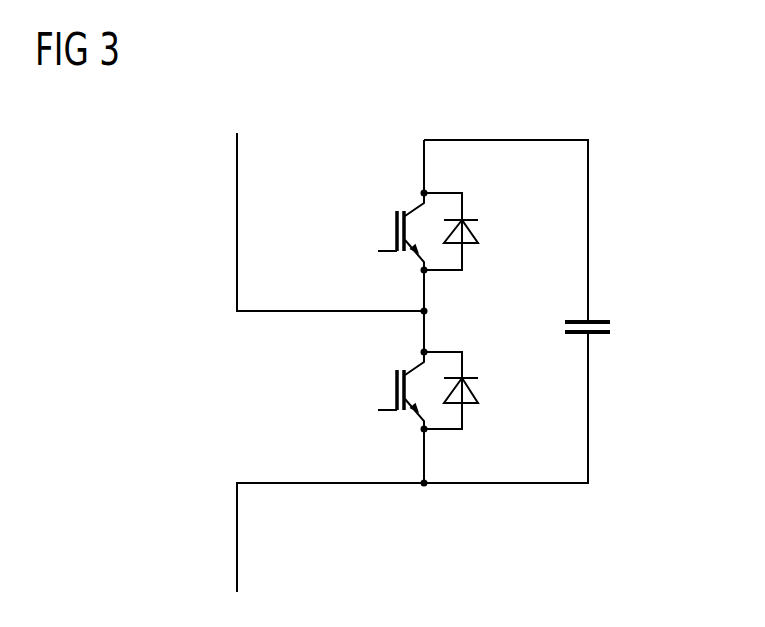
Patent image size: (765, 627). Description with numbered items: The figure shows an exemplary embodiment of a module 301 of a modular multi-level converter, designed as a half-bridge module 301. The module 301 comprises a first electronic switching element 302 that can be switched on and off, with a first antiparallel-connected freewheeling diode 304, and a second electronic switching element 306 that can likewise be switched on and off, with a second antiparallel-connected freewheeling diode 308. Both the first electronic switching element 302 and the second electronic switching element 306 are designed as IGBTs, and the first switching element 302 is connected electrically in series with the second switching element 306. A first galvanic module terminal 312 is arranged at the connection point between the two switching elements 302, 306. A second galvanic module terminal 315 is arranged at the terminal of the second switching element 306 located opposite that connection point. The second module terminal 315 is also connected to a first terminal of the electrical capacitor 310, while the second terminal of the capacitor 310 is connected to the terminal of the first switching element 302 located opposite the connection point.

The module 301 is at (603, 88).
The first electronic switching element 302 is at (396, 220).
The first freewheeling diode 304 is at (470, 229).
The second electronic switching element 306 is at (396, 380).
The second freewheeling diode 308 is at (470, 393).
The capacitor 310 is at (594, 321).
The first module terminal 312 is at (237, 181).
The second module terminal 315 is at (237, 530).